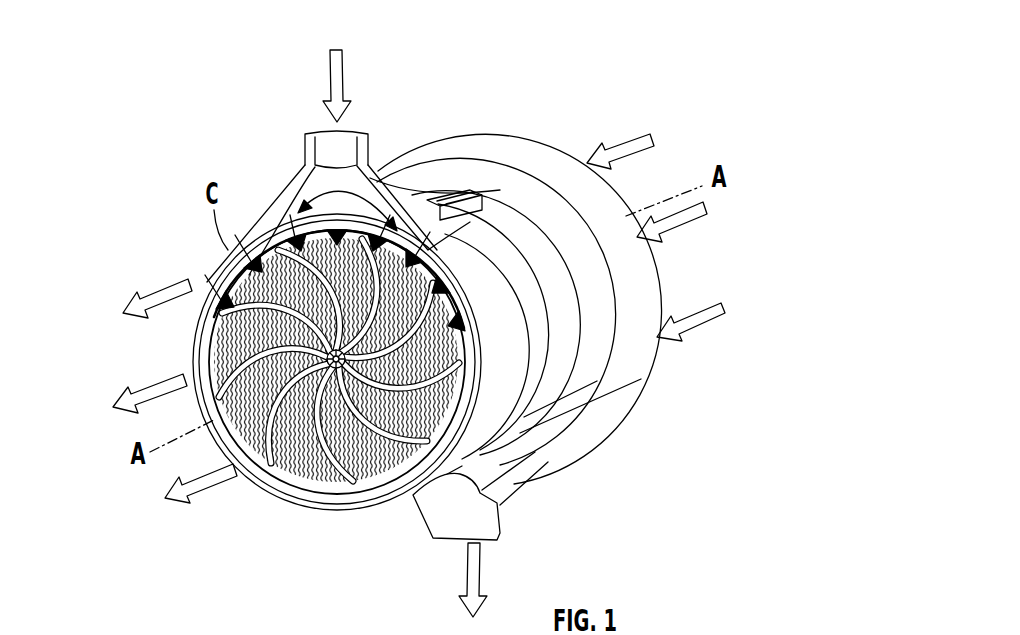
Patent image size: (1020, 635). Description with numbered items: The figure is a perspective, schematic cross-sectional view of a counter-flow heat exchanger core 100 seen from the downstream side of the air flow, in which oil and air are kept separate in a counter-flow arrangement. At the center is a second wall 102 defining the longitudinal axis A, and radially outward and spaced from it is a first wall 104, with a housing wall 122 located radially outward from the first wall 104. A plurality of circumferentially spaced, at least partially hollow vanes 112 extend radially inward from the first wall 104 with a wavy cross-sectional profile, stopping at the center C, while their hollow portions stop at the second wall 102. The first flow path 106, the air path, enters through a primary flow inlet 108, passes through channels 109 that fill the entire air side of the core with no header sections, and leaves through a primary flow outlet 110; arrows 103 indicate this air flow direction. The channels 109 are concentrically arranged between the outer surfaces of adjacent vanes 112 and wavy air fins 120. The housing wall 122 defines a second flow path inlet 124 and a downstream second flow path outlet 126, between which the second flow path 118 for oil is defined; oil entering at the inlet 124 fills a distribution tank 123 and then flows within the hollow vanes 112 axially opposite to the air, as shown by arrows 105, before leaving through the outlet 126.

The counter-flow heat exchanger core 100 is at (620, 70).
The second wall 102 is at (478, 372).
The arrows 103 is at (697, 336).
The first wall 104 is at (522, 470).
The arrows 105 is at (350, 84).
The first flow path 106 is at (210, 345).
The primary flow inlet 108 is at (623, 214).
The channels 109 is at (238, 392).
The primary flow outlet 110 is at (228, 272).
The hollow vanes 112 is at (326, 484).
The second flow path 118 is at (365, 196).
The wavy air fins 120 is at (372, 488).
The housing wall 122 is at (490, 312).
The distribution tank 123 is at (310, 185).
The second flow path inlet 124 is at (314, 124).
The second flow path outlet 126 is at (500, 540).